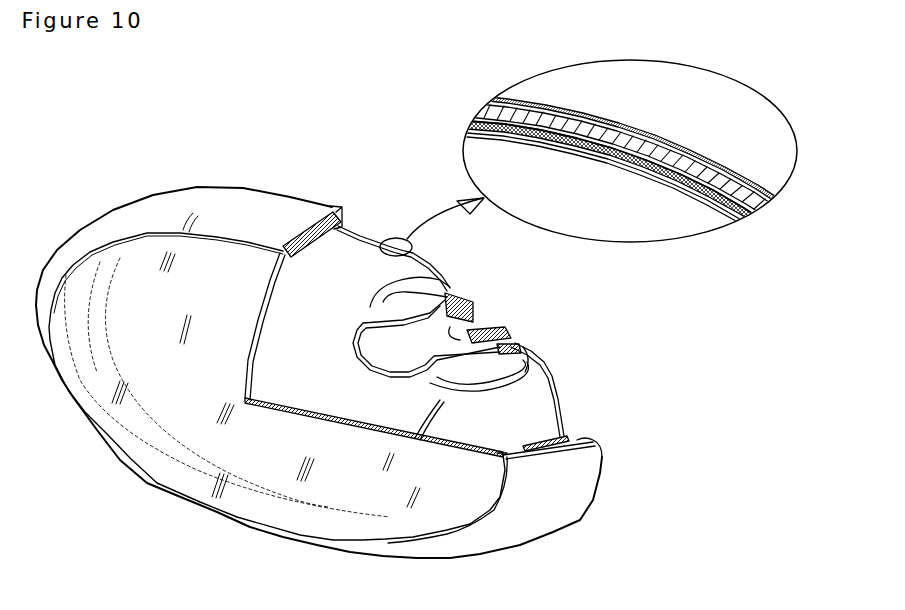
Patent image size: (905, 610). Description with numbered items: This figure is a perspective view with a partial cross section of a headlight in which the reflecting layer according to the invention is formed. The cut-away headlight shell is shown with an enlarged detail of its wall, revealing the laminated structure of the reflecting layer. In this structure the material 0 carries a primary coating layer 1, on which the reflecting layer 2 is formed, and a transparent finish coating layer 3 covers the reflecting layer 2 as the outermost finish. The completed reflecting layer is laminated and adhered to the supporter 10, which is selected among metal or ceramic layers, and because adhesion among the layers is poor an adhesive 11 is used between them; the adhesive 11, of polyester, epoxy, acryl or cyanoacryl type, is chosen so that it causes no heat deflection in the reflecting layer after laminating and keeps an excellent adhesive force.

The supporter 10 is at (682, 152).
The adhesive 11 is at (772, 194).
The material 0 is at (760, 208).
The primary coating layer 1 is at (753, 217).
The reflecting layer 2 is at (742, 220).
The transparent finish coating layer 3 is at (711, 207).